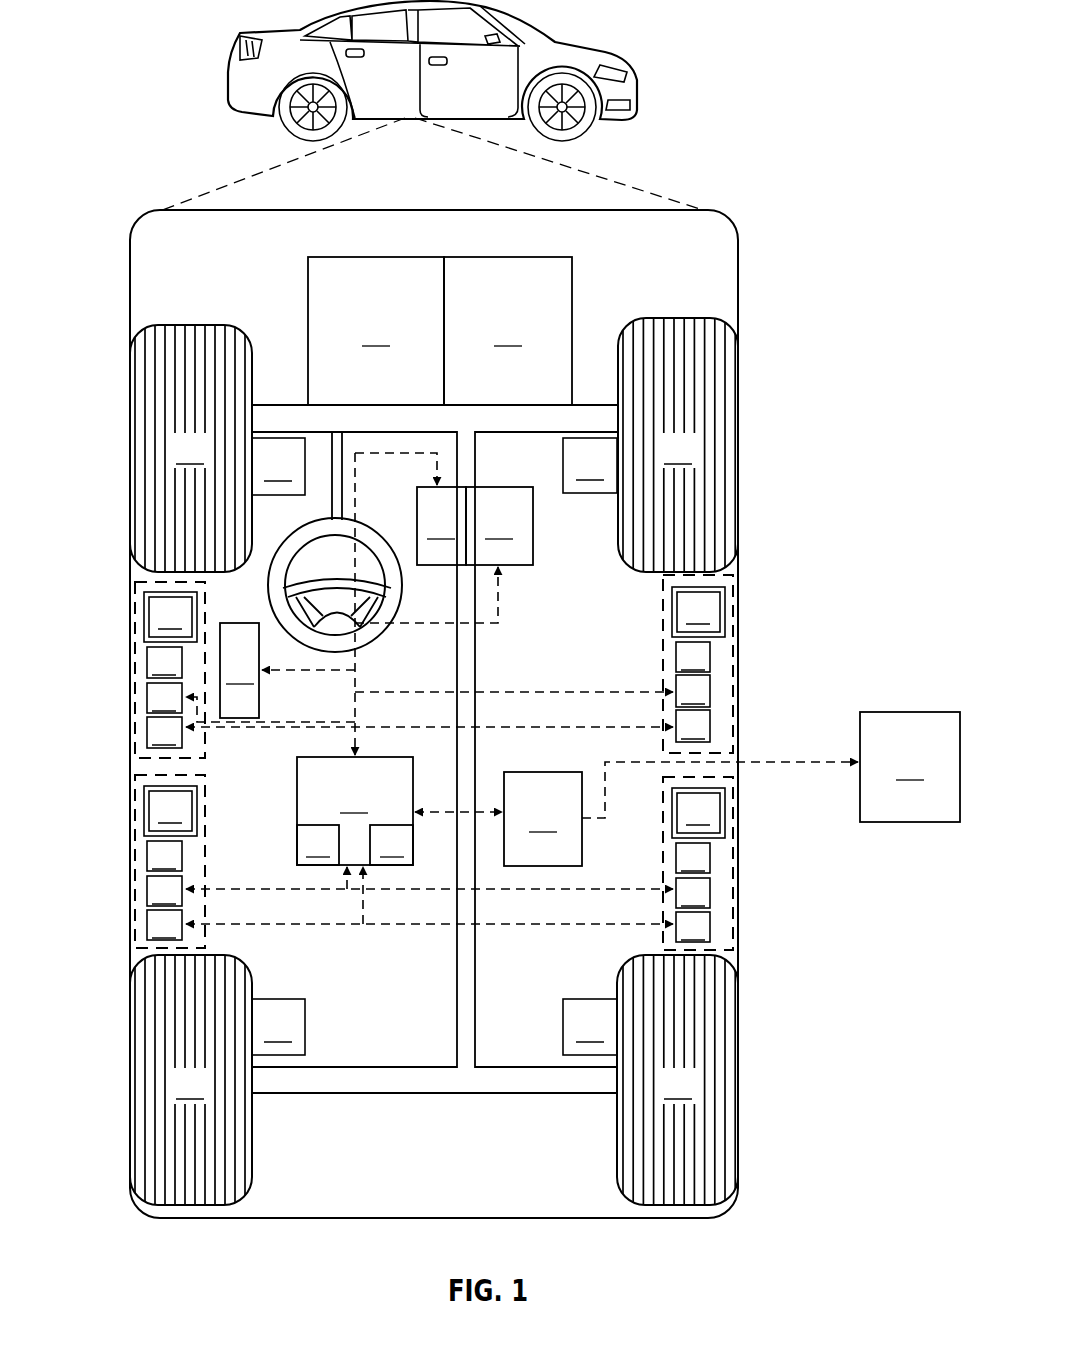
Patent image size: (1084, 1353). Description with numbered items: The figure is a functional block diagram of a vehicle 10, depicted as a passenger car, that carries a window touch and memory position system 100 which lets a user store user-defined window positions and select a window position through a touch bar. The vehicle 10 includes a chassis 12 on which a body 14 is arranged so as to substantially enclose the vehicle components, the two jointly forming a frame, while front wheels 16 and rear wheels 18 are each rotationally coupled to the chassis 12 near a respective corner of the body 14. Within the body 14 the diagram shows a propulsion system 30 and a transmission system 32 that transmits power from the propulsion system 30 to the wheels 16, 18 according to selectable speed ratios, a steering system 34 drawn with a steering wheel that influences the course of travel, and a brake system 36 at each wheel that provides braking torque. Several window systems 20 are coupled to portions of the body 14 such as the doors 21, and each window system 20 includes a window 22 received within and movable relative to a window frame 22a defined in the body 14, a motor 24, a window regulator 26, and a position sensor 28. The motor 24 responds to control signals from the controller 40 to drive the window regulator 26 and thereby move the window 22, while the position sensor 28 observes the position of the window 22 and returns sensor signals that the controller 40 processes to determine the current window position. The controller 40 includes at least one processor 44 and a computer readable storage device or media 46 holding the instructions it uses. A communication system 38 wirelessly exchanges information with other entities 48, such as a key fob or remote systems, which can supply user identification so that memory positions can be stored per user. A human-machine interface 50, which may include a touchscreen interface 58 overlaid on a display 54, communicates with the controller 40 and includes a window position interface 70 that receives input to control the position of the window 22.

The vehicle 10 is at (233, 76).
The window touch and memory position system 100 is at (776, 204).
The chassis 12 is at (455, 995).
The body 14 is at (130, 268).
The front wheels 16 is at (434, 445).
The rear wheels 18 is at (434, 1080).
The window system 20 is at (435, 762).
The door 21 is at (735, 870).
The window 22 is at (434, 712).
The window frame 22a is at (725, 808).
The motor 24 is at (428, 791).
The window regulator 26 is at (428, 757).
The position sensor 28 is at (428, 826).
The propulsion system 30 is at (376, 331).
The transmission system 32 is at (508, 331).
The steering system 34 is at (387, 634).
The brake system 36 is at (434, 746).
The communication system 38 is at (543, 819).
The controller 40 is at (355, 811).
The processor 44 is at (318, 845).
The computer readable storage device or media 46 is at (391, 845).
The other entities 48 is at (910, 767).
The human-machine interface 50 is at (491, 505).
The display 54 is at (499, 526).
The touchscreen interface 58 is at (441, 526).
The window position interface 70 is at (239, 670).